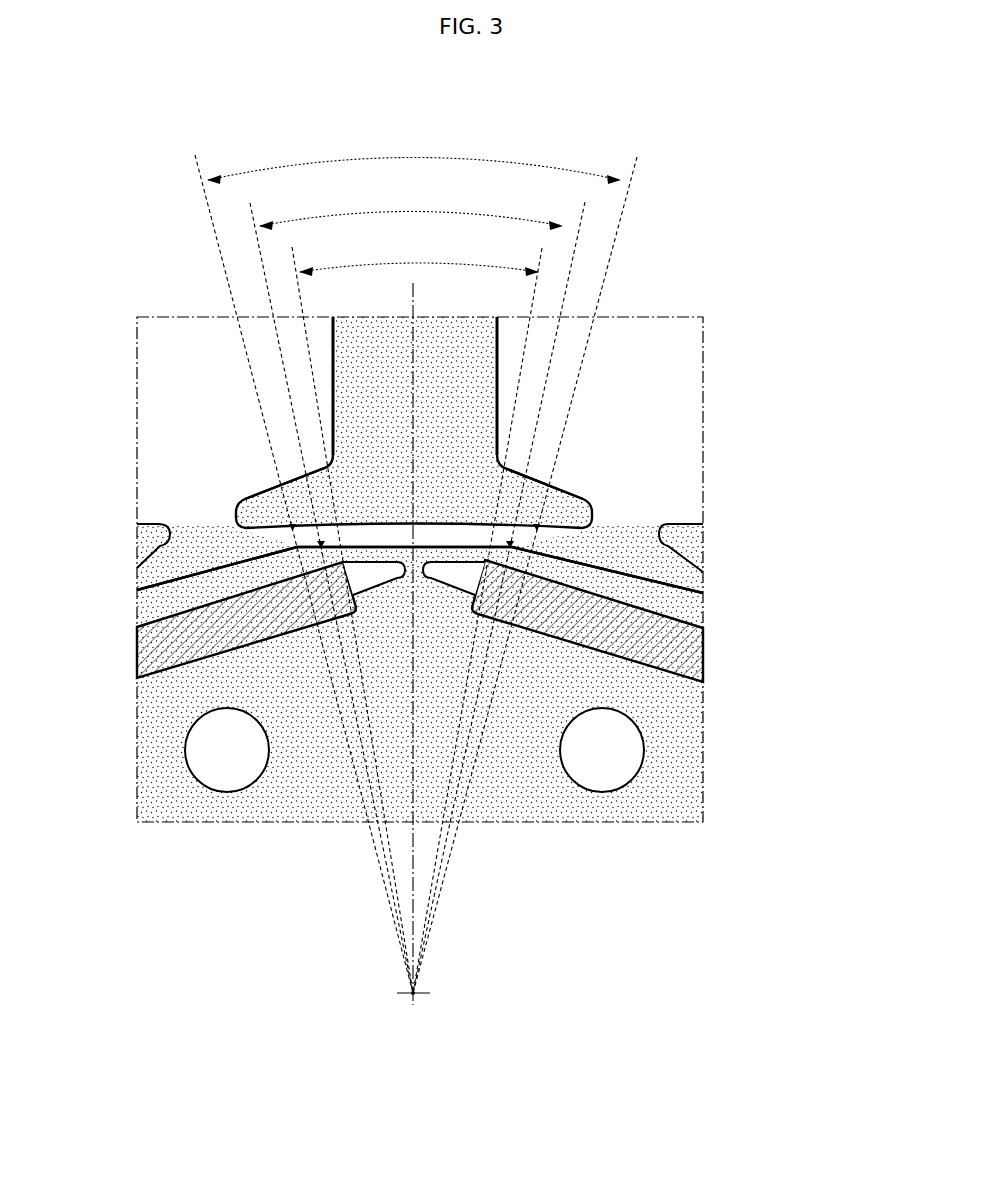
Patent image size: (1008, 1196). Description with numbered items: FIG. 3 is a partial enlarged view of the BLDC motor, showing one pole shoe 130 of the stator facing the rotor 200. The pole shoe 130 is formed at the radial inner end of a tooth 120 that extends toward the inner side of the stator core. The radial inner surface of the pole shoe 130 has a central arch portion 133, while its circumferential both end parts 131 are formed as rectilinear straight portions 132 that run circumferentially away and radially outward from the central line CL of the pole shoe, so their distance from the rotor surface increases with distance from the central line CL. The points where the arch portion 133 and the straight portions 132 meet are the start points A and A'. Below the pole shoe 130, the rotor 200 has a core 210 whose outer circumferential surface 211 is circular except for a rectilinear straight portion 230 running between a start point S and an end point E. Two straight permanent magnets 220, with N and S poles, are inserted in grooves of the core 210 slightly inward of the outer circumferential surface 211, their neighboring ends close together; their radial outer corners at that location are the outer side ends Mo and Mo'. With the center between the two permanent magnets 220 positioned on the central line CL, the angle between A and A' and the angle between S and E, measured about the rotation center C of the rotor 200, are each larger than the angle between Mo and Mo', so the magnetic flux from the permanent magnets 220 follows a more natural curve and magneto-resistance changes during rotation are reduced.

The teeth 120 is at (352, 403).
The pole shoe 130 is at (500, 433).
The circumferential both end parts 131 is at (252, 502).
The straight portion 132 is at (165, 542).
The arch portion 133 is at (455, 668).
The rotor 200 is at (703, 589).
The outer circumferential surface 211 is at (420, 570).
The core 210 is at (163, 793).
The permanent magnet 220 is at (172, 662).
The straight portion 230 is at (352, 668).
The start point A is at (176, 516).
The start point A' is at (684, 493).
The end point E is at (600, 538).
The start point S is at (137, 589).
The outer side end Mo is at (114, 640).
The outer side end Mo' is at (750, 558).
The central line CL is at (420, 292).
The rotation center C is at (406, 998).